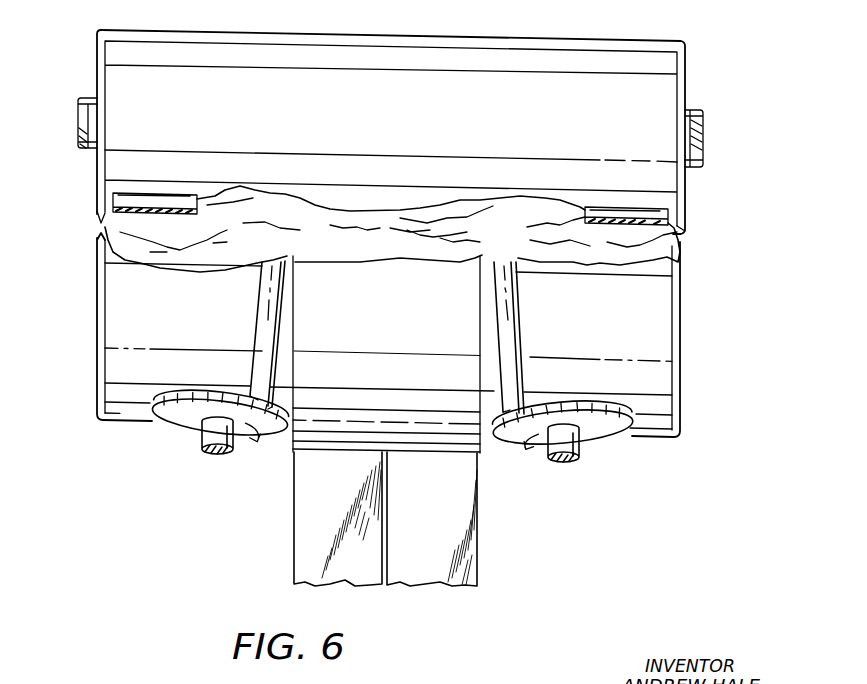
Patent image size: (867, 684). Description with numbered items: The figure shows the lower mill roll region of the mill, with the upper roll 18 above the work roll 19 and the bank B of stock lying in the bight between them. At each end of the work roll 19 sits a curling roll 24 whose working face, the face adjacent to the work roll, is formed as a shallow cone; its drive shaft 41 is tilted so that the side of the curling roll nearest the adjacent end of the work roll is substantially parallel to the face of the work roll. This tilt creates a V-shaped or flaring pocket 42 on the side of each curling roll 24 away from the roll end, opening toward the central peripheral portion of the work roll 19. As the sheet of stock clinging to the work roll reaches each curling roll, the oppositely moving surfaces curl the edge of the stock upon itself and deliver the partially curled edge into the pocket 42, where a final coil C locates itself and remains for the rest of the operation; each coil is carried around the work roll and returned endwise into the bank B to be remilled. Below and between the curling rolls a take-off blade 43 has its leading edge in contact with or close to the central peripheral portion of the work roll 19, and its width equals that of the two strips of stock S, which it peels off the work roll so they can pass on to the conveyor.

The upper roller 18 is at (97, 80).
The work roll 19 is at (93, 369).
The bank of stock B is at (355, 213).
The final coil C is at (264, 270).
The pocket 42 is at (241, 392).
The curling roll 24 is at (190, 432).
The drive shaft 41 is at (218, 457).
The take-off blade 43 is at (425, 436).
The strips of stock S is at (298, 525).